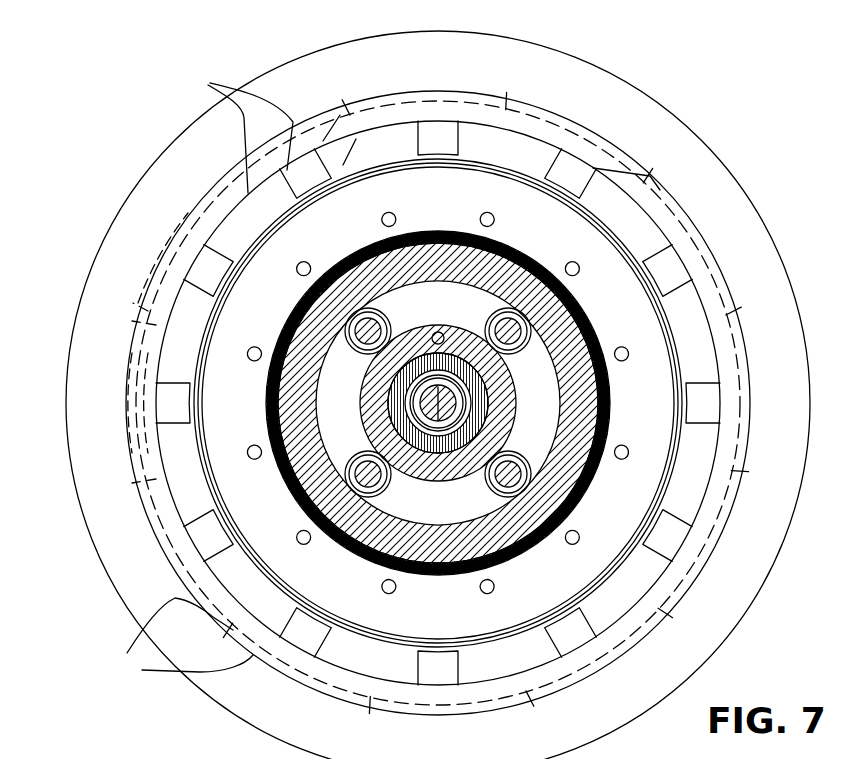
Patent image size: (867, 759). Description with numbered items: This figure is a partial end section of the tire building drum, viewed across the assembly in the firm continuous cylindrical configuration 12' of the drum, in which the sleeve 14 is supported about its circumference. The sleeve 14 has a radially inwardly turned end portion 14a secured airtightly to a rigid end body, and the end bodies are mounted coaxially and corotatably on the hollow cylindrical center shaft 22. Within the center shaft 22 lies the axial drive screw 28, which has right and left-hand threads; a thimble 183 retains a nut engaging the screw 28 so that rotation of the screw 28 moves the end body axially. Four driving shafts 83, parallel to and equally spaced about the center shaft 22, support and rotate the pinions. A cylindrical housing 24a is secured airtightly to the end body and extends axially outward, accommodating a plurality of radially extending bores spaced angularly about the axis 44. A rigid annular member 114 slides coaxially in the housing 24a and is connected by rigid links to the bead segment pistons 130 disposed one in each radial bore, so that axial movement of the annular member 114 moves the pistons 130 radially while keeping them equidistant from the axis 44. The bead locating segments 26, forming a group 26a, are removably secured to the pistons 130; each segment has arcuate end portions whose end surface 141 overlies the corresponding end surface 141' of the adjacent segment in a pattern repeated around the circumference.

The drum configuration 12' is at (438, 395).
The sleeve 14 is at (703, 140).
The end portion of sleeve 14a is at (610, 130).
The center shaft 22 is at (378, 380).
The cylindrical housing 24a is at (270, 410).
The bead locating segments 26 is at (540, 108).
The group of bead engaging segments 26a is at (210, 84).
The axial drive screw shaft 28 is at (435, 415).
The axis 44 is at (420, 403).
The driving shafts 83 is at (364, 345).
The annular member 114 is at (567, 470).
The bead segment pistons 130 is at (345, 162).
The end surface 141 is at (94, 368).
The end surface of adjacent segment 141' is at (115, 262).
The thimble 183 is at (395, 415).